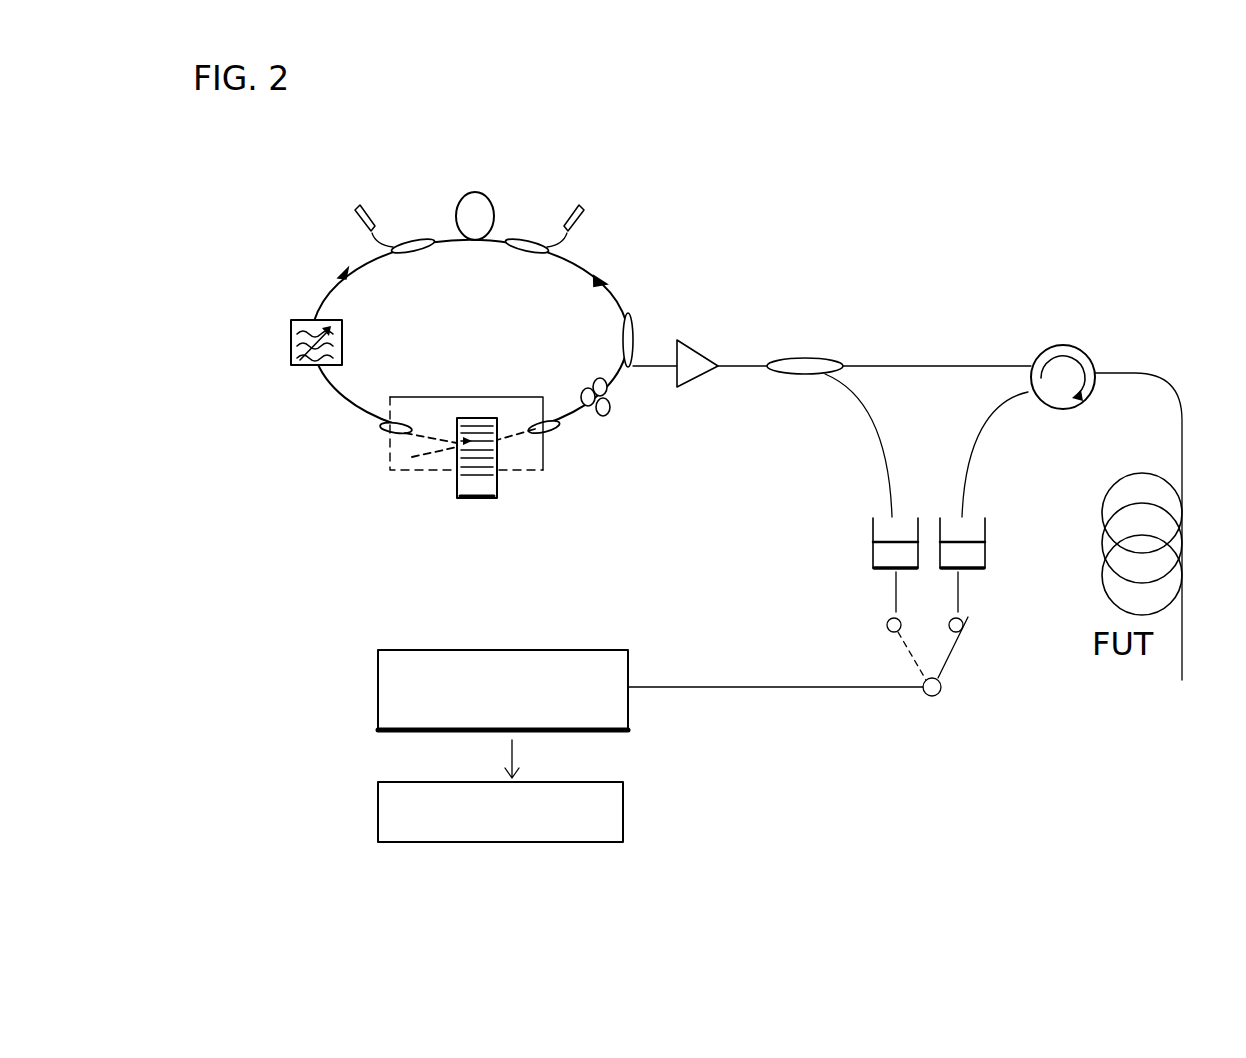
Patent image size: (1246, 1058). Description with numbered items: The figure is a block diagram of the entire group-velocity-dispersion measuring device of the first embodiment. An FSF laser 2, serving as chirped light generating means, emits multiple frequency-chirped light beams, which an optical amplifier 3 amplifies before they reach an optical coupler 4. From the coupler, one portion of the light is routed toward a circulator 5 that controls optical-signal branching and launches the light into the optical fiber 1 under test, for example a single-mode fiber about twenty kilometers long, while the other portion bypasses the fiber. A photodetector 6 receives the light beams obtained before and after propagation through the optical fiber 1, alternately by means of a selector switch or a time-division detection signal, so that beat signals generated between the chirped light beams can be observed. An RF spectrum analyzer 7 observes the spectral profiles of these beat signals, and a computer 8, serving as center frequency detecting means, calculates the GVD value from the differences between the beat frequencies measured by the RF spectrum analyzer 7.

The optical fiber under test 1 is at (1165, 577).
The FSF laser 2 is at (587, 257).
The optical amplifier 3 is at (692, 360).
The optical coupler 4 is at (800, 373).
The circulator 5 is at (1063, 343).
The photodetector 6 is at (978, 580).
The RF spectrum analyzer 7 is at (570, 677).
The computer 8 is at (607, 812).